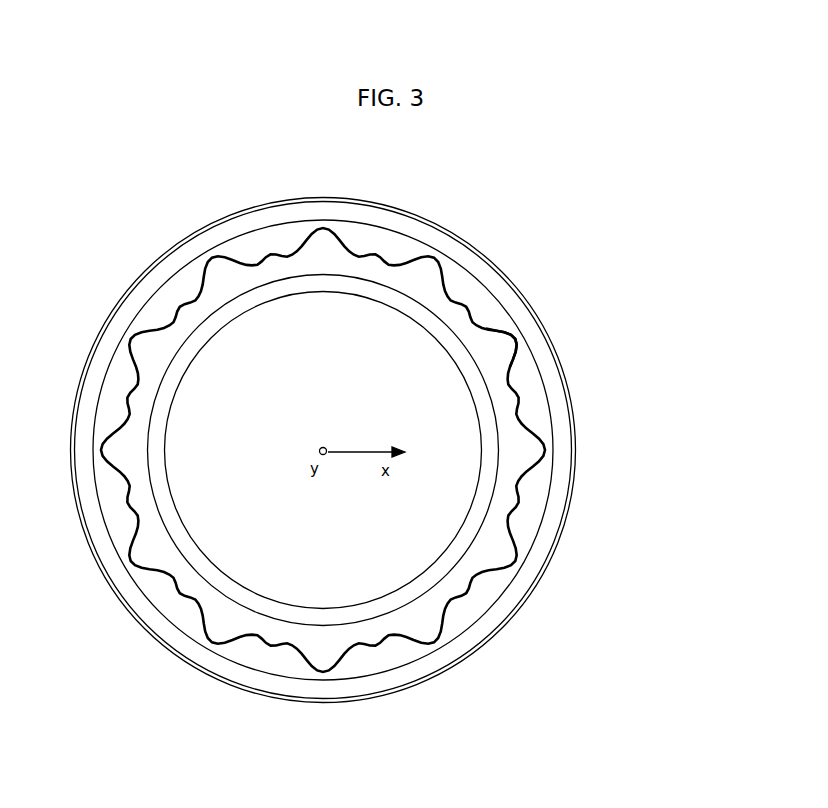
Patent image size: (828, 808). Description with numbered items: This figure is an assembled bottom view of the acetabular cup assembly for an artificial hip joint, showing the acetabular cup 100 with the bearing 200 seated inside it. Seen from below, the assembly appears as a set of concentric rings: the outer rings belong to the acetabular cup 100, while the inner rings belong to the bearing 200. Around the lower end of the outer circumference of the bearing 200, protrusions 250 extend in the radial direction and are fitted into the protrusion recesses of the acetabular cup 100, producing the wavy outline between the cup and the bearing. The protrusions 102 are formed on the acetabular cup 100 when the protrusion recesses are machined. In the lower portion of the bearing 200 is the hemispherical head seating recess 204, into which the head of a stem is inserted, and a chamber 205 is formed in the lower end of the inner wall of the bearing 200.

The acetabular cup 100 is at (577, 403).
The protrusions 102 is at (395, 253).
The bearing 200 is at (293, 660).
The head seating recess 204 is at (433, 477).
The chamber 205 is at (453, 553).
The protrusions 250 is at (507, 343).